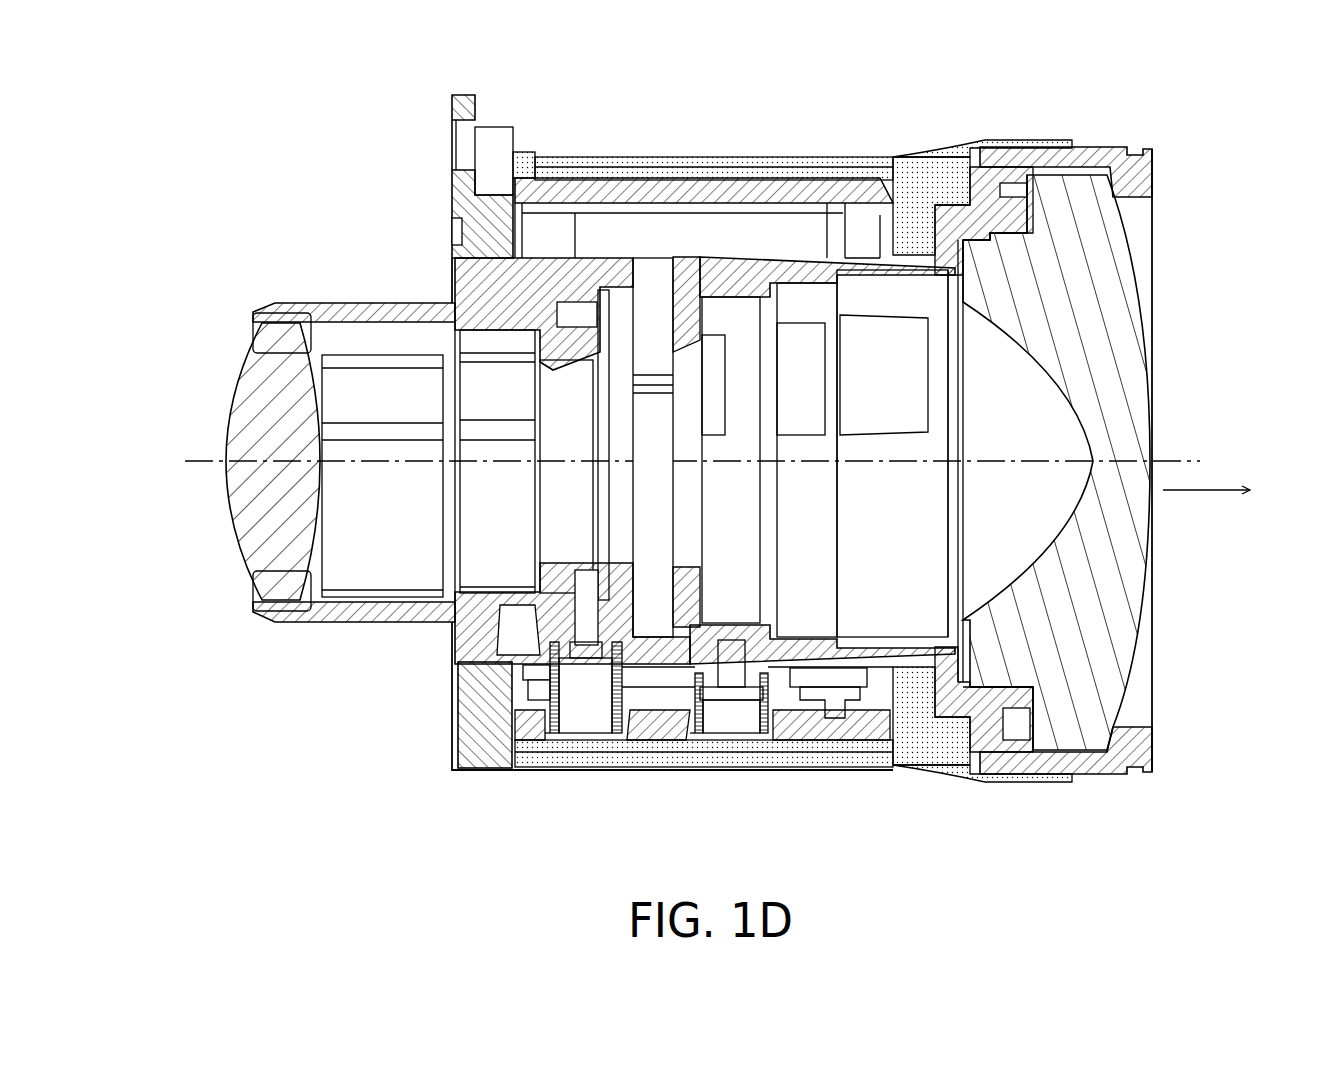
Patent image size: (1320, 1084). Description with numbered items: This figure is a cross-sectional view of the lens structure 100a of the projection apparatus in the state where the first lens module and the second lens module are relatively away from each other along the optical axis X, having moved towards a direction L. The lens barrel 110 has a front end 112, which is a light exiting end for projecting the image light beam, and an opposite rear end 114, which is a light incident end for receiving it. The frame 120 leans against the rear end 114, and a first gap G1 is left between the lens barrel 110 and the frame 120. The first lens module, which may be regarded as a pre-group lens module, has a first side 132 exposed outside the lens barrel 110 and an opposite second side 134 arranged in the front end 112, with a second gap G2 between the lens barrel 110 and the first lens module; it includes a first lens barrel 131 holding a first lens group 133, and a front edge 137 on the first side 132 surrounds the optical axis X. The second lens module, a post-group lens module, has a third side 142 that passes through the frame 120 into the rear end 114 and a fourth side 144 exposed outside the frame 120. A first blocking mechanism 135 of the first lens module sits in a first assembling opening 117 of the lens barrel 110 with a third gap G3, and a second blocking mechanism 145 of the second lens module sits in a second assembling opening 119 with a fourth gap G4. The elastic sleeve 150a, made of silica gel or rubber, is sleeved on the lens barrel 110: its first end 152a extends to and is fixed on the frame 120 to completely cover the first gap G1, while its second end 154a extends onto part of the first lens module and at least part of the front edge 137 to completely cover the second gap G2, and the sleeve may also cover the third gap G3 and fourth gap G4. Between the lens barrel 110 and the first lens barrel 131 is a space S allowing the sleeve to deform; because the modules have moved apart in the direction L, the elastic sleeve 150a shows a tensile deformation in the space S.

The lens structure 100a is at (1288, 805).
The lens barrel 110 is at (740, 193).
The front end 112 is at (900, 728).
The rear end 114 is at (512, 732).
The first assembling opening 117 is at (774, 741).
The second assembling opening 119 is at (622, 740).
The frame 120 is at (480, 748).
The first lens barrel 131 is at (988, 212).
The first side 132 is at (1160, 275).
The first lens group 133 is at (1040, 412).
The second side 134 is at (664, 343).
The first blocking mechanism 135 is at (733, 722).
The front edge 137 is at (1090, 163).
The third side 142 is at (634, 640).
The fourth side 144 is at (240, 385).
The second blocking mechanism 145 is at (585, 708).
The elastic sleeve 150a is at (810, 162).
The first end 152a is at (526, 145).
The second end 154a is at (1033, 143).
The first gap G1 is at (510, 188).
The second gap G2 is at (862, 240).
The third gap G3 is at (694, 740).
The fourth gap G4 is at (548, 738).
The space S is at (940, 188).
The optical axis X is at (703, 462).
The direction L is at (1219, 492).